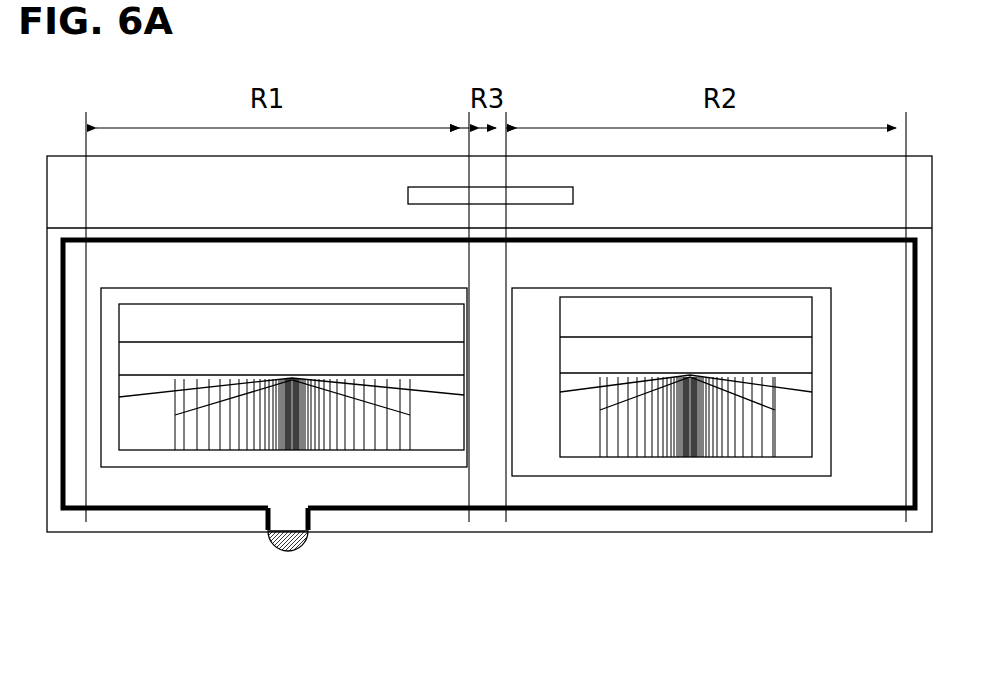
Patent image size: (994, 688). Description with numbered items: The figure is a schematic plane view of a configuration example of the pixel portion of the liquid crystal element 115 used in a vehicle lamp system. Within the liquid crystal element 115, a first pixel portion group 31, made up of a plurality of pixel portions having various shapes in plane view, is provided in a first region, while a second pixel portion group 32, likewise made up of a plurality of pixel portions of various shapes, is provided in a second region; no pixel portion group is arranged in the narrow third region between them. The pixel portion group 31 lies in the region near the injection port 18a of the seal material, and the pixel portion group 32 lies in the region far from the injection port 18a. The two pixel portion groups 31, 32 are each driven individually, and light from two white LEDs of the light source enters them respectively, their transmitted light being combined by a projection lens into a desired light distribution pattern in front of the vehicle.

The liquid crystal element 115 is at (458, 682).
The injection port 18a is at (284, 528).
The pixel portion group 31 is at (352, 462).
The pixel portion group 32 is at (709, 470).